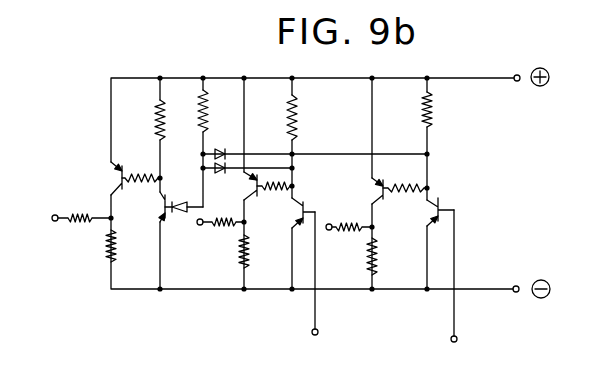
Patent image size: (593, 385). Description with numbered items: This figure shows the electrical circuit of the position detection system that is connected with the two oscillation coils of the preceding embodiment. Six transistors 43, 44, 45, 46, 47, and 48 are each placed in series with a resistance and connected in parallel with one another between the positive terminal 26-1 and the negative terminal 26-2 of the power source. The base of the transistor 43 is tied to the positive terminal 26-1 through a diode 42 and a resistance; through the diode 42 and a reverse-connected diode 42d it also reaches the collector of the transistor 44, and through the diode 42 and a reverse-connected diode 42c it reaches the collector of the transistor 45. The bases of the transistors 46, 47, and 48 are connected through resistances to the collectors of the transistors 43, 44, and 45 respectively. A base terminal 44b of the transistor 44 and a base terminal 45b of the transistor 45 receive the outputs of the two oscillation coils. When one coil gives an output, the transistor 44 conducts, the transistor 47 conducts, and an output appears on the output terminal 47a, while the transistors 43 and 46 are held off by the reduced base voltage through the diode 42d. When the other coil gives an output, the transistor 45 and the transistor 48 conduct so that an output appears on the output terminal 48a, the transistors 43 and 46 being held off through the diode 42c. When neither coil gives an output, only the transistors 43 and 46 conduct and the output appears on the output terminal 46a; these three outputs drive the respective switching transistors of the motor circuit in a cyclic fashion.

The positive terminal 26-1 is at (517, 74).
The negative terminal 26-2 is at (516, 285).
The diode 42 is at (180, 182).
The diode 42c is at (219, 149).
The diode 42d is at (227, 166).
The transistor 43 is at (158, 204).
The transistor 44 is at (296, 211).
The base terminal 44b is at (318, 335).
The transistor 45 is at (430, 208).
The base terminal 45b is at (457, 341).
The transistor 46 is at (113, 178).
The output terminal 46a is at (54, 222).
The transistor 47 is at (253, 180).
The output terminal 47a is at (200, 226).
The transistor 48 is at (373, 189).
The output terminal 48a is at (329, 231).